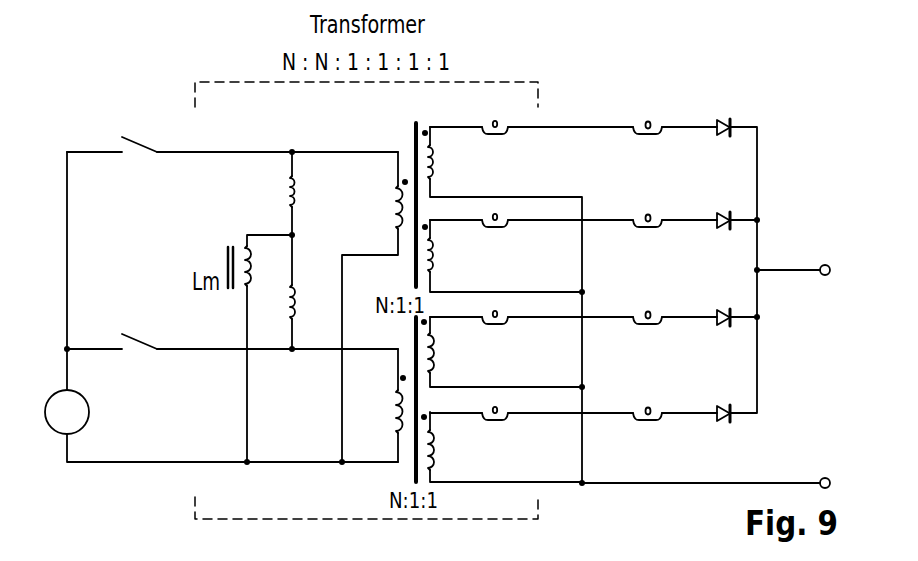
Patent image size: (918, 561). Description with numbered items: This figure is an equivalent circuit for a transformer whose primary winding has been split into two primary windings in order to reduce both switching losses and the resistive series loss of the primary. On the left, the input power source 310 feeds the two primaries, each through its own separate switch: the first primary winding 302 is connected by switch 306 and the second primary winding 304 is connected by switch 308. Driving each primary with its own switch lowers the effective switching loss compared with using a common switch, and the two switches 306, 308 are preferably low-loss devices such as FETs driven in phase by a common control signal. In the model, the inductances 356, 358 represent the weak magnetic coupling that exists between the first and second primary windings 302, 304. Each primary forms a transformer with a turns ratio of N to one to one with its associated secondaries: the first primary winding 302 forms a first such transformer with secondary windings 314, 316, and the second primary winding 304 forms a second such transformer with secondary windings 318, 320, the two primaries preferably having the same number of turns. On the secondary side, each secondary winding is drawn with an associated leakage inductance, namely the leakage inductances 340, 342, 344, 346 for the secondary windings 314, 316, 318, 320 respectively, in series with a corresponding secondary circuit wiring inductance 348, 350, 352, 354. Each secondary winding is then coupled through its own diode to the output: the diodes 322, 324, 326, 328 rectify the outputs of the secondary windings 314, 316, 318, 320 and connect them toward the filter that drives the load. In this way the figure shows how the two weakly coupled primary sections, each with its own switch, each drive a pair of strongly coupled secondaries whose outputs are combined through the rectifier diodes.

The first primary winding 302 is at (393, 216).
The second primary winding 304 is at (393, 401).
The switch 306 is at (143, 142).
The switch 308 is at (143, 337).
The input power source 310 is at (89, 409).
The secondary winding 314 is at (437, 170).
The secondary winding 316 is at (437, 263).
The secondary winding 318 is at (437, 358).
The secondary winding 320 is at (437, 455).
The diode 322 is at (743, 104).
The diode 324 is at (733, 198).
The diode 326 is at (723, 310).
The diode 328 is at (725, 406).
The leakage inductance 340 is at (491, 134).
The leakage inductance 342 is at (491, 227).
The leakage inductance 344 is at (491, 322).
The leakage inductance 346 is at (491, 417).
The secondary circuit wiring inductance 348 is at (651, 122).
The secondary circuit wiring inductance 350 is at (651, 215).
The secondary circuit wiring inductance 352 is at (651, 312).
The secondary circuit wiring inductance 354 is at (653, 408).
The inductance 356 is at (295, 199).
The inductance 358 is at (294, 288).